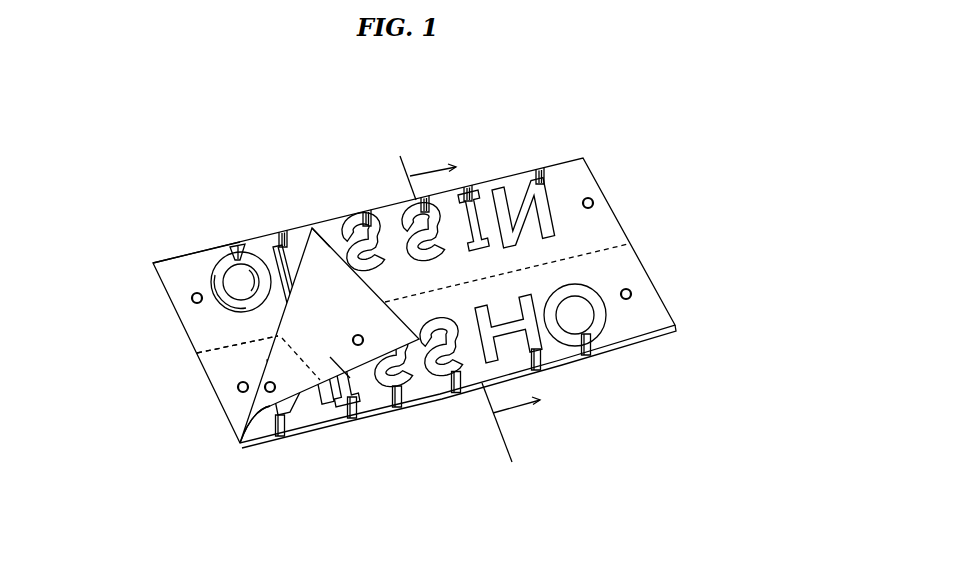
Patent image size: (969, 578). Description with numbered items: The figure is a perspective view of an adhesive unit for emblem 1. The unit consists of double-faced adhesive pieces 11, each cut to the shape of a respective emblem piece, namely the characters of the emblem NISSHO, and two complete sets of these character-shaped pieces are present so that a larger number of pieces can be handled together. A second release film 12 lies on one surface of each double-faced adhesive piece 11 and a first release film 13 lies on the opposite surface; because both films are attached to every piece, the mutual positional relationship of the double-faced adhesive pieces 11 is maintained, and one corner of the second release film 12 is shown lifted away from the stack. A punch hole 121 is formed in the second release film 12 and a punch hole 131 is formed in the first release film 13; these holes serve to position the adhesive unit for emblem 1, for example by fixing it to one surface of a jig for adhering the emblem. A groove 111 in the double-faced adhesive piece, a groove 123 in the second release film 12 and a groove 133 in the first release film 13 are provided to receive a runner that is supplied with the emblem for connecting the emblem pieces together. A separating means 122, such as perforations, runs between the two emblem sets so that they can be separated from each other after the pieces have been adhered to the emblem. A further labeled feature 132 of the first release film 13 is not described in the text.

The adhesive unit for emblem 1 is at (381, 320).
The double-faced adhesive piece 11 is at (560, 212).
The groove 111 is at (236, 250).
The second release film 12 is at (205, 330).
The punch hole 121 is at (237, 445).
The separating means 122 is at (213, 357).
The groove 123 is at (210, 252).
The first release film 13 is at (376, 403).
The punch hole 131 is at (282, 428).
The joining portion 132 is at (330, 357).
The groove 133 is at (312, 228).